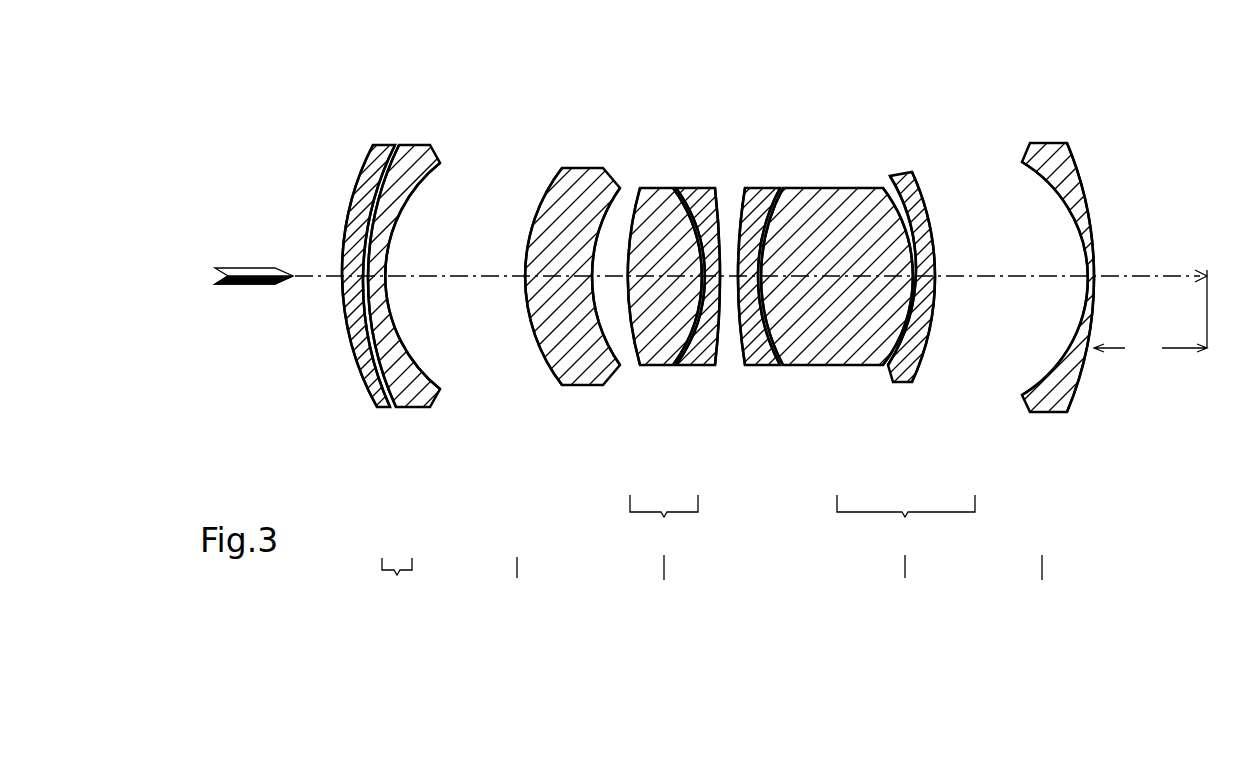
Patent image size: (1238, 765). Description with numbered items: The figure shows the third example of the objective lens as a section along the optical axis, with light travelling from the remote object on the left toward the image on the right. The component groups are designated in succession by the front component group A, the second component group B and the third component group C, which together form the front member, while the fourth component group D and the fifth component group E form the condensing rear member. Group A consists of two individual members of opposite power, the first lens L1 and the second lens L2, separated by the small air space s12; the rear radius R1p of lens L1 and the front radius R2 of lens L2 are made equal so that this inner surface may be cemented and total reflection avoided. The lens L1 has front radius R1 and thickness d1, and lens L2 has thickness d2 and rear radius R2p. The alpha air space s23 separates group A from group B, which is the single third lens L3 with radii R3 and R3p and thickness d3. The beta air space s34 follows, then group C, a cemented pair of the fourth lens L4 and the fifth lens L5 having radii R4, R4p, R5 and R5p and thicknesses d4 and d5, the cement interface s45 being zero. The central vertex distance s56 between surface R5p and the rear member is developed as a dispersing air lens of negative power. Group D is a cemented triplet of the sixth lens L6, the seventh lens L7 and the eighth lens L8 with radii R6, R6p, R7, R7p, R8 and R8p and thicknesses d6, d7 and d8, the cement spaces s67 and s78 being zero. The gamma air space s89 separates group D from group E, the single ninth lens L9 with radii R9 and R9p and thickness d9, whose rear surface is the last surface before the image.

The front component group A is at (397, 584).
The second component group B is at (516, 583).
The third component group C is at (664, 552).
The fourth component group D is at (906, 552).
The fifth component group E is at (1038, 582).
The first lens L1 is at (382, 407).
The second lens L2 is at (412, 407).
The third lens L3 is at (557, 375).
The fourth lens L4 is at (657, 367).
The fifth lens L5 is at (685, 367).
The sixth lens L6 is at (770, 367).
The seventh lens L7 is at (837, 367).
The eighth lens L8 is at (910, 383).
The ninth lens L9 is at (1045, 412).
The radius of curvature of front surface of first lens R1 is at (365, 168).
The radius of curvature of rear surface of first lens R1p is at (393, 145).
The radius of curvature of front surface of second lens R2 is at (411, 145).
The radius of curvature of rear surface of second lens R2p is at (430, 180).
The radius of curvature of front surface of third lens R3 is at (552, 178).
The radius of curvature of rear surface of third lens R3p is at (600, 168).
The radius of curvature of front surface of fourth lens R4 is at (636, 188).
The radius of curvature of rear surface of fourth lens R4p is at (660, 188).
The radius of curvature of front surface of fifth lens R5 is at (689, 190).
The radius of curvature of rear surface of fifth lens R5p is at (732, 193).
The radius of curvature of front surface of sixth lens R6 is at (745, 190).
The radius of curvature of rear surface of sixth lens R6p is at (776, 190).
The radius of curvature of front surface of seventh lens R7 is at (808, 190).
The radius of curvature of rear surface of seventh lens R7p is at (866, 190).
The radius of curvature of front surface of eighth lens R8 is at (908, 172).
The radius of curvature of rear surface of eighth lens R8p is at (925, 197).
The radius of curvature of front surface of ninth lens R9 is at (1053, 193).
The radius of curvature of rear surface of ninth lens R9p is at (1092, 217).
The axial thickness of first lens d1 is at (343, 267).
The axial thickness of second lens d2 is at (385, 272).
The axial thickness of third lens d3 is at (560, 278).
The axial thickness of fourth lens d4 is at (656, 278).
The axial thickness of fifth lens d5 is at (716, 272).
The axial thickness of sixth lens d6 is at (726, 282).
The axial thickness of seventh lens d7 is at (830, 278).
The axial thickness of eighth lens d8 is at (932, 275).
The axial thickness of ninth lens d9 is at (1090, 270).
The air space between first and second lenses s12 is at (360, 290).
The alpha air space between groups A and B s23 is at (460, 283).
The beta air space between groups B and C s34 is at (625, 358).
The cement space between fourth and fifth lenses s45 is at (708, 367).
The central vertex distance s56 is at (720, 280).
The cement space between sixth and seventh lenses s67 is at (763, 290).
The cement space between seventh and eighth lenses s78 is at (922, 293).
The gamma image-side air space s89 is at (993, 279).